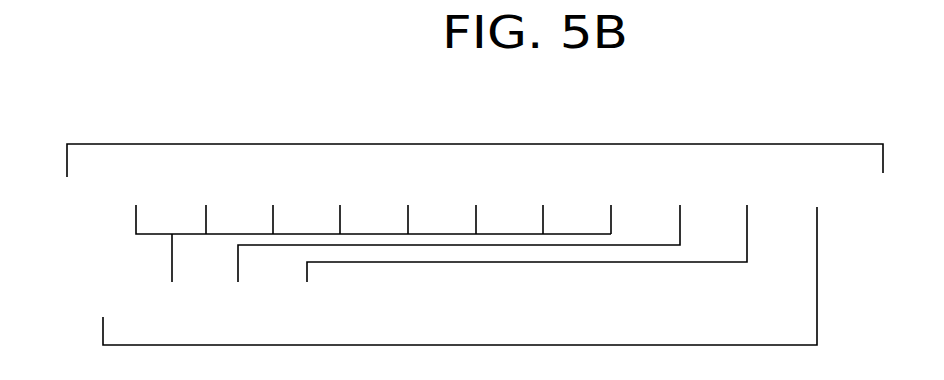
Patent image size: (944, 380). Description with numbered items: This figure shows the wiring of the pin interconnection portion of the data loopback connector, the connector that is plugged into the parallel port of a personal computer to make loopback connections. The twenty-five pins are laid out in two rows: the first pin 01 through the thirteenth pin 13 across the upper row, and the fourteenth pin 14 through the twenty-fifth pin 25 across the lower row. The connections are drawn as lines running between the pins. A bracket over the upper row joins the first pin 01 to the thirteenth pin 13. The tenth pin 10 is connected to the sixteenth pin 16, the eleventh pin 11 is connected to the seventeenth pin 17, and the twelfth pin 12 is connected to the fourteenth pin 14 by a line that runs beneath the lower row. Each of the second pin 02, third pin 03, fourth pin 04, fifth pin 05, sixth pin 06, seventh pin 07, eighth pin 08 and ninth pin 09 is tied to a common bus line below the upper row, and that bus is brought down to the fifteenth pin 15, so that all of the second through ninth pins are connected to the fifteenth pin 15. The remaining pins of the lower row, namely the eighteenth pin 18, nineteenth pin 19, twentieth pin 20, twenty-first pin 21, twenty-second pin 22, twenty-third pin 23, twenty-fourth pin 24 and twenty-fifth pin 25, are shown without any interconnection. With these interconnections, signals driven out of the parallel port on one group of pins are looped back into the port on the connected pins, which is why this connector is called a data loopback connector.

The first pin 01 is at (462, 176).
The second pin 02 is at (360, 204).
The third pin 03 is at (204, 204).
The fourth pin 04 is at (271, 204).
The fifth pin 05 is at (340, 204).
The sixth pin 06 is at (408, 204).
The seventh pin 07 is at (476, 204).
The eighth pin 08 is at (543, 204).
The ninth pin 09 is at (611, 204).
The tenth pin 10 is at (472, 228).
The eleventh pin 11 is at (541, 228).
The twelfth pin 12 is at (473, 260).
The thirteenth pin 13 is at (882, 192).
The fourteenth pin 14 is at (103, 305).
The fifteenth pin 15 is at (170, 278).
The sixteenth pin 16 is at (239, 305).
The seventeenth pin 17 is at (306, 305).
The eighteenth pin 18 is at (374, 305).
The nineteenth pin 19 is at (441, 305).
The twentieth pin 20 is at (509, 305).
The twenty-first pin 21 is at (576, 305).
The twenty-second pin 22 is at (644, 305).
The twenty-third pin 23 is at (712, 305).
The twenty-fourth pin 24 is at (779, 305).
The twenty-fifth pin 25 is at (847, 305).